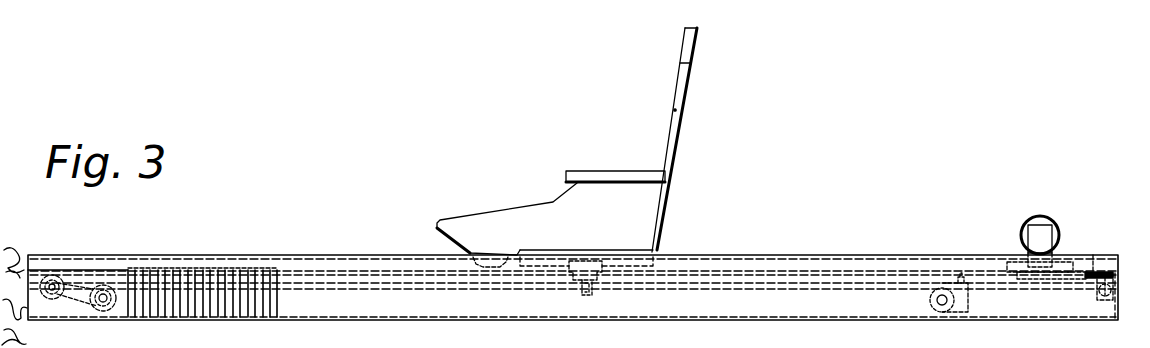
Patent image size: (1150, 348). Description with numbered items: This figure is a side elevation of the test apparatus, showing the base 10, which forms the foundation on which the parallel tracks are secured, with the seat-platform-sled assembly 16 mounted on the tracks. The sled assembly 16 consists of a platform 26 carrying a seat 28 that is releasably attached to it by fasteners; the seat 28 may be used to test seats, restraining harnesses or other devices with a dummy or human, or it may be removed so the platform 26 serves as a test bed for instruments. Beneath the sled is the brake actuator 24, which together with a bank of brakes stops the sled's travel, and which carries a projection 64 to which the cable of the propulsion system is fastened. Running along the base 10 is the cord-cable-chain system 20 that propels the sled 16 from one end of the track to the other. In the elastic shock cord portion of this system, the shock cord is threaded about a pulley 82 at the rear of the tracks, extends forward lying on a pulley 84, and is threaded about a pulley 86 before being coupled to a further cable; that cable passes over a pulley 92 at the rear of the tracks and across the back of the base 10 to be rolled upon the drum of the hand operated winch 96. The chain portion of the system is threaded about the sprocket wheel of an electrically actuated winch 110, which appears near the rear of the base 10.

The base 10 is at (1035, 308).
The seat-platform-sled assembly 16 is at (665, 213).
The cord-cable-chain system 20 is at (352, 271).
The brake actuator 24 is at (607, 258).
The platform 26 is at (654, 250).
The seat 28 is at (656, 190).
The projection 64 is at (581, 294).
The pulley 82 is at (1118, 268).
The pulley 84 is at (110, 312).
The pulley 86 is at (60, 273).
The pulley 92 is at (1093, 270).
The hand operated winch 96 is at (962, 313).
The electrically actuated winch 110 is at (1048, 244).